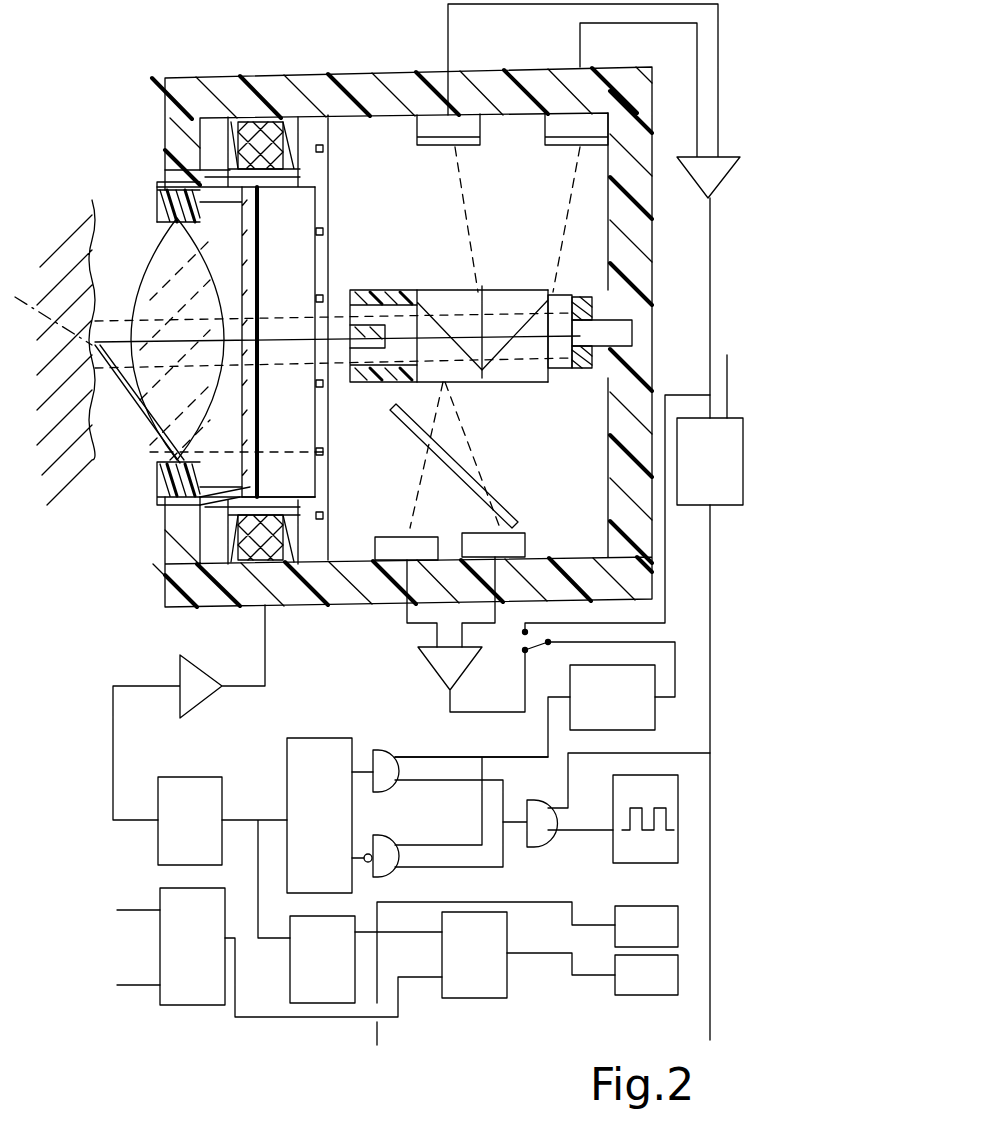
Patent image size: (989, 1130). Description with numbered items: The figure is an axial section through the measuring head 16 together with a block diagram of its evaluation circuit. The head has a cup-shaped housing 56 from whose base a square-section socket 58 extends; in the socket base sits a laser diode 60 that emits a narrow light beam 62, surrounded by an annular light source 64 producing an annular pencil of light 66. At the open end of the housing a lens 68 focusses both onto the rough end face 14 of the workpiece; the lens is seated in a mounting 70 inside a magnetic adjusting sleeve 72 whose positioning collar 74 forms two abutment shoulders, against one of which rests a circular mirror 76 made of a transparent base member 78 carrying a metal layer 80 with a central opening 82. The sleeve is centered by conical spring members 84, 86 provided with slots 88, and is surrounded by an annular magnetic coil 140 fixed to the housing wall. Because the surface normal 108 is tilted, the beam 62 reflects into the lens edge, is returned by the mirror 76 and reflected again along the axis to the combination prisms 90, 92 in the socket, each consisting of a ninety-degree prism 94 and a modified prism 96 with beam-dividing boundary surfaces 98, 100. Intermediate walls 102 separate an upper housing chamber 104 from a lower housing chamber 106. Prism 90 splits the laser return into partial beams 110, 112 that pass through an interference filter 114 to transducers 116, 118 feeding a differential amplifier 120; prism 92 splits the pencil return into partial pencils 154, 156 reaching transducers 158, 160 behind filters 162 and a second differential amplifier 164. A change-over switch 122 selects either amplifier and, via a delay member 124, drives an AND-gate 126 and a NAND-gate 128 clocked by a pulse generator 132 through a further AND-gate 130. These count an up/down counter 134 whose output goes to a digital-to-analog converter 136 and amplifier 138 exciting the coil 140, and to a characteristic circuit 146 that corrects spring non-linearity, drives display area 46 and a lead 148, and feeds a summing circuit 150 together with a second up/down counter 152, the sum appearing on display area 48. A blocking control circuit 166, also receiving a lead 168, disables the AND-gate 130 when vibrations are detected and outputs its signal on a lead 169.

The end face 14 is at (95, 200).
The measuring head 16 is at (412, 45).
The display area 46 is at (646, 926).
The display area 48 is at (646, 975).
The housing 56 is at (365, 605).
The socket 58 is at (393, 297).
The laser diode 60 is at (625, 333).
The light beam 62 is at (530, 382).
The annular light source 64 is at (600, 300).
The pencil of light 66 is at (565, 372).
The lens 68 is at (135, 300).
The mounting 70 is at (152, 340).
The magnetic adjusting sleeve 72 is at (150, 180).
The positioning collar 74 is at (213, 195).
The circular mirror 76 is at (258, 447).
The base member 78 is at (260, 470).
The metal layer 80 is at (258, 405).
The central opening 82 is at (262, 358).
The spring member 84 is at (190, 112).
The spring member 86 is at (322, 112).
The slots 88 is at (330, 150).
The combination prism 90 is at (442, 300).
The combination prism 92 is at (500, 300).
The 90-degree prism 94 is at (490, 382).
The modified 90-degree prism 96 is at (540, 300).
The boundary surface 98 is at (480, 290).
The boundary surface 100 is at (530, 290).
The intermediate walls 102 is at (366, 297).
The upper housing chamber 104 is at (389, 197).
The lower housing chamber 106 is at (379, 470).
The normal 108 is at (32, 298).
The partial beam 110 is at (410, 490).
The partial beam 112 is at (478, 460).
The interference filter 114 is at (495, 492).
The opto-electrical transducer 116 is at (418, 535).
The opto-electrical transducer 118 is at (505, 545).
The differential amplifier 120 is at (440, 670).
The change-over switch 122 is at (548, 645).
The delay member 124 is at (535, 699).
The AND-gate 126 is at (375, 762).
The NAND-gate 128 is at (372, 850).
The AND-gate 130 is at (535, 845).
The free wheeling pulse generator 132 is at (645, 819).
The up/down counter 134 is at (330, 815).
The digital-to-analog converter 136 is at (224, 857).
The amplifier 138 is at (195, 705).
The annular magnetic coil 140 is at (262, 125).
The characteristic circuit 146 is at (366, 959).
The lead 148 is at (377, 1030).
The summing circuit 150 is at (480, 1000).
The up/down counter 152 is at (279, 952).
The partial pencil of light 154 is at (462, 165).
The partial pencil of light 156 is at (570, 165).
The opto-electrical transducer 158 is at (470, 128).
The opto-electrical transducer 160 is at (567, 128).
The filter 162 is at (600, 138).
The differential amplifier 164 is at (703, 180).
The blocking control circuit 166 is at (710, 619).
The lead 168 is at (727, 368).
The lead 169 is at (710, 985).